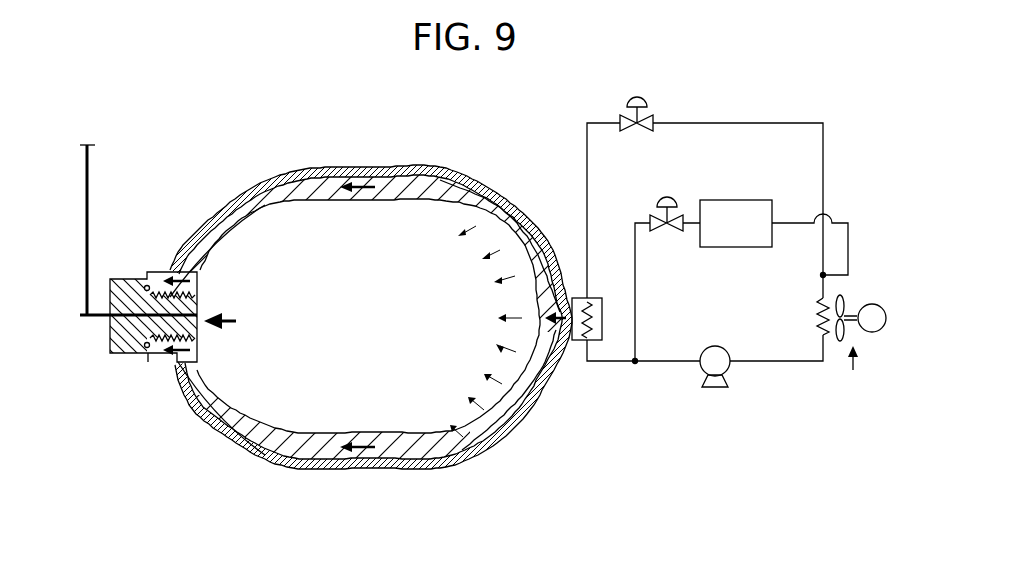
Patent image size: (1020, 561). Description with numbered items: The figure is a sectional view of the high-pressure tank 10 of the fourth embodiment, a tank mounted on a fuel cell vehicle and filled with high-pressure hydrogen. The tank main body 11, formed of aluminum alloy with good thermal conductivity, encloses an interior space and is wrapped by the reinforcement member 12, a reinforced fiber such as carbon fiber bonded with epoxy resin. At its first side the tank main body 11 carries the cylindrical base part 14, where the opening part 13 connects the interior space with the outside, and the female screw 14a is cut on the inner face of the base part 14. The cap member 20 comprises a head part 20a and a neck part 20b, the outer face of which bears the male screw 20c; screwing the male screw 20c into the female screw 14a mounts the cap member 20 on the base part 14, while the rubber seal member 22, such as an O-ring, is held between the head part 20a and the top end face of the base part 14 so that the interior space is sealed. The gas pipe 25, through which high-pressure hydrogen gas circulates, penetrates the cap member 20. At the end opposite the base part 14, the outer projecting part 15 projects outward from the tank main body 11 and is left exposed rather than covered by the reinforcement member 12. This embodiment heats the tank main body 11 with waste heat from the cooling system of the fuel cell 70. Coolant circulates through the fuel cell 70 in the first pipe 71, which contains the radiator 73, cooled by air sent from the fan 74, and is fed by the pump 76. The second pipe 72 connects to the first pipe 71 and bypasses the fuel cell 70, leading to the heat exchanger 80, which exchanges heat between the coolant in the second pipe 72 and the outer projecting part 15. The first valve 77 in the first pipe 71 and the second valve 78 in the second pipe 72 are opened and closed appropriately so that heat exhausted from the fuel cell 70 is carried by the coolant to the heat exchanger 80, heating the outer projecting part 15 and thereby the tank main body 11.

The high-pressure tank 10 is at (373, 146).
The tank main body 11 is at (505, 222).
The reinforcement member 12 is at (483, 190).
The opening part 13 is at (230, 321).
The base part 14 is at (160, 362).
The female screw 14a is at (178, 334).
The outer projecting part 15 is at (563, 332).
The cap member 20 is at (162, 324).
The head part 20a is at (112, 340).
The neck part 20b is at (192, 308).
The male screw 20c is at (194, 292).
The seal member 22 is at (147, 350).
The gas pipe 25 is at (90, 175).
The fuel cell 70 is at (738, 200).
The first pipe 71 is at (790, 223).
The second pipe 72 is at (735, 123).
The radiator 73 is at (816, 312).
The fan 74 is at (853, 372).
The pump 76 is at (715, 346).
The first valve 77 is at (668, 235).
The second valve 78 is at (643, 133).
The heat exchanger 80 is at (588, 297).